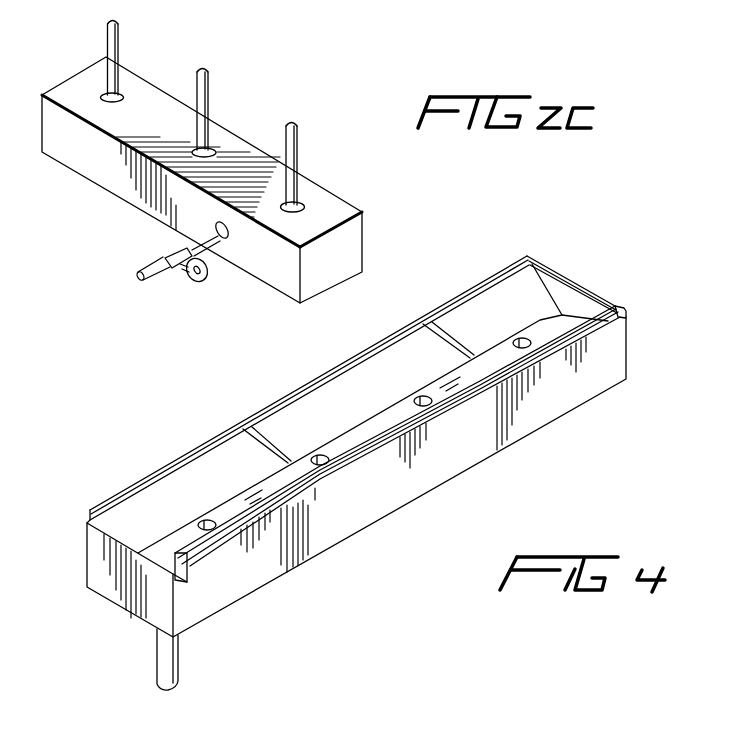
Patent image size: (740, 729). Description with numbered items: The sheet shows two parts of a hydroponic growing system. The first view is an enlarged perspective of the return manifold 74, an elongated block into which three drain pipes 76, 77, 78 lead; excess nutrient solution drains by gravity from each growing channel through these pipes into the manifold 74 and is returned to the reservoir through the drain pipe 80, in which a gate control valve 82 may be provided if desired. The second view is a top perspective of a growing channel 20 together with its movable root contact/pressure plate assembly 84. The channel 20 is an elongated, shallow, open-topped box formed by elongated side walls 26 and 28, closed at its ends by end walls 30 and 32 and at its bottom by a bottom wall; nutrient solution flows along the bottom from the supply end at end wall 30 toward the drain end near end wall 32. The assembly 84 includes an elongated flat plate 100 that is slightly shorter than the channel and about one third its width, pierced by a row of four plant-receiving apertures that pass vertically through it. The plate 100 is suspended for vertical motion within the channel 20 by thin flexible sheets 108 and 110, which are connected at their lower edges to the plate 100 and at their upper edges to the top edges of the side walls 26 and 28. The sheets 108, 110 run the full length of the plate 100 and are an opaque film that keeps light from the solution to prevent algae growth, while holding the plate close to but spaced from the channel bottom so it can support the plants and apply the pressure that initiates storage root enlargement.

In FIG. 4, the channel 20 is at (354, 465).
In FIG. 4, the side wall 26 is at (258, 412).
In FIG. 4, the side wall 28 is at (231, 588).
In FIG. 4, the end wall 30 is at (570, 285).
In FIG. 4, the end wall 32 is at (95, 563).
In FIG. 2C, the return manifold 74 is at (348, 243).
In FIG. 2C, the drain pipe 76 is at (117, 50).
In FIG. 4, the drain pipe 76 is at (157, 652).
In FIG. 2C, the drain pipe 77 is at (206, 93).
In FIG. 2C, the drain pipe 78 is at (293, 141).
In FIG. 2C, the drain pipe 80 is at (200, 230).
In FIG. 2C, the gate control valve 82 is at (177, 268).
In FIG. 4, the movable root contact/pressure plate assembly 84 is at (330, 412).
In FIG. 4, the flat plate 100 is at (187, 533).
In FIG. 4, the thin flexible sheet 108 is at (500, 300).
In FIG. 4, the thin flexible sheet 110 is at (543, 343).